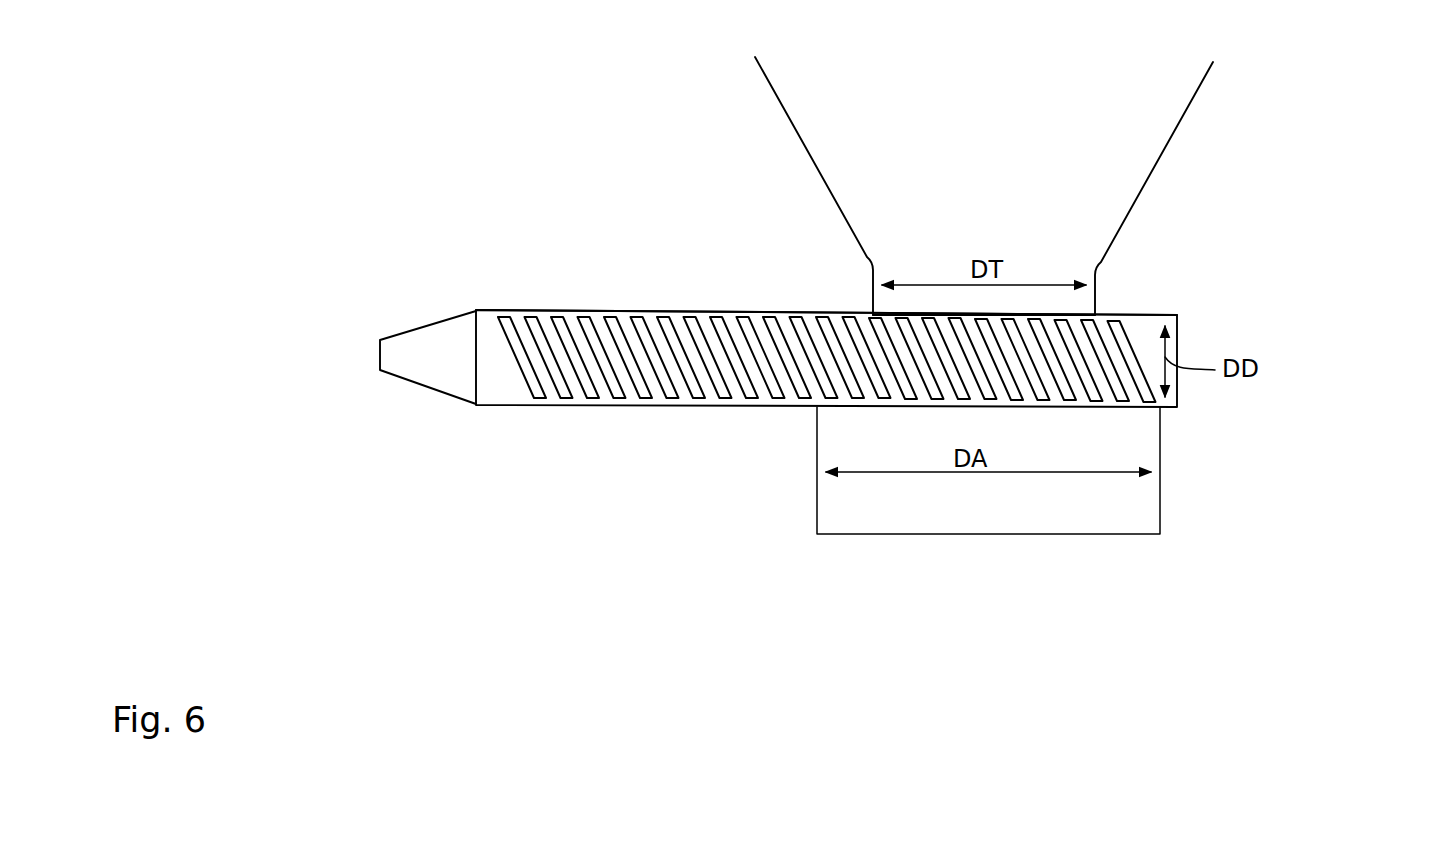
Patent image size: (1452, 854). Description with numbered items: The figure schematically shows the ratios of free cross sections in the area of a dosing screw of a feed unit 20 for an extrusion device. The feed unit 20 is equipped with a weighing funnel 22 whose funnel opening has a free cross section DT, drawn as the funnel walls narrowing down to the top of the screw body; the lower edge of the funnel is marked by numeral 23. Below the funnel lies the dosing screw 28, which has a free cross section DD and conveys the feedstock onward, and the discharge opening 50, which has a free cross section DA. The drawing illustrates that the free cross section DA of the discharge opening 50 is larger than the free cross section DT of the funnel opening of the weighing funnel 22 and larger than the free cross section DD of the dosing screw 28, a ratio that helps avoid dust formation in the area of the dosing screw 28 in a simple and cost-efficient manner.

The feed unit 20 is at (1090, 186).
The weighing funnel 22 is at (1133, 203).
The hopper outlet 23 is at (1098, 298).
The dosing screw 28 is at (552, 310).
The discharge opening 50 is at (712, 495).